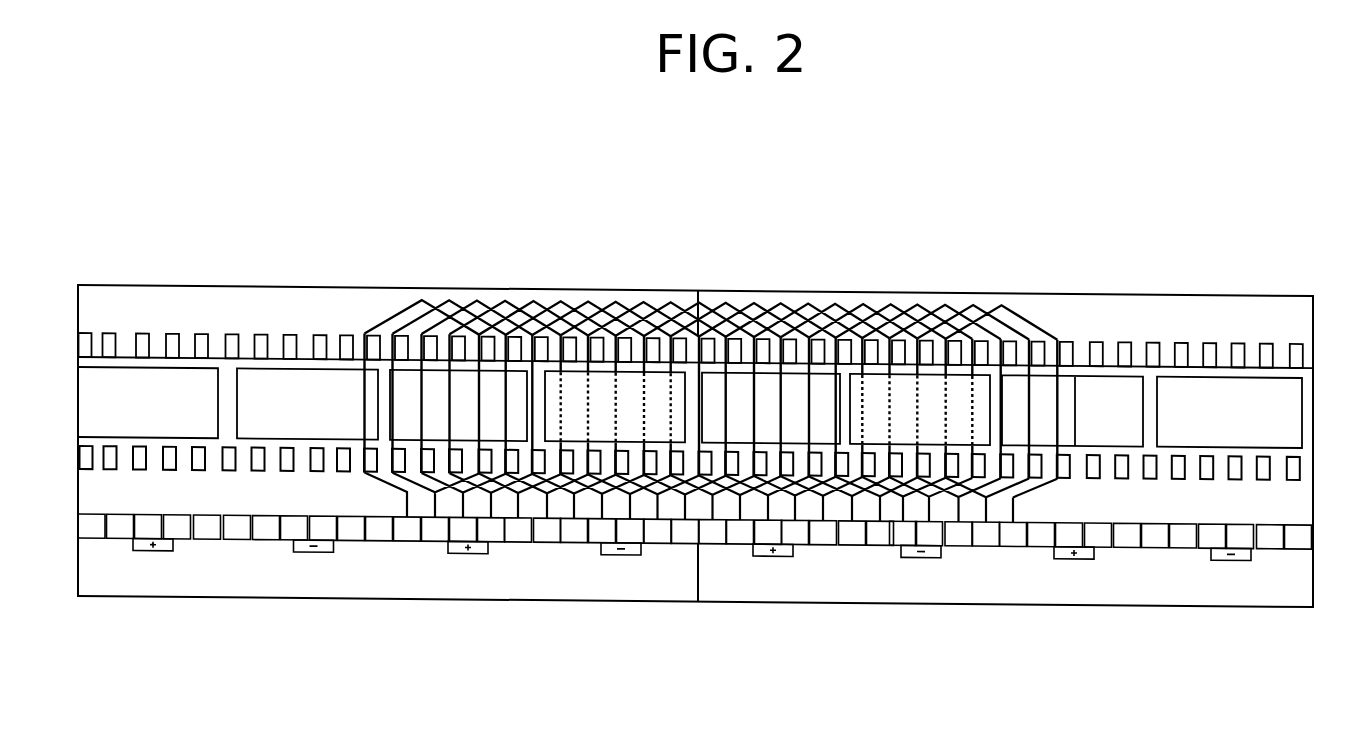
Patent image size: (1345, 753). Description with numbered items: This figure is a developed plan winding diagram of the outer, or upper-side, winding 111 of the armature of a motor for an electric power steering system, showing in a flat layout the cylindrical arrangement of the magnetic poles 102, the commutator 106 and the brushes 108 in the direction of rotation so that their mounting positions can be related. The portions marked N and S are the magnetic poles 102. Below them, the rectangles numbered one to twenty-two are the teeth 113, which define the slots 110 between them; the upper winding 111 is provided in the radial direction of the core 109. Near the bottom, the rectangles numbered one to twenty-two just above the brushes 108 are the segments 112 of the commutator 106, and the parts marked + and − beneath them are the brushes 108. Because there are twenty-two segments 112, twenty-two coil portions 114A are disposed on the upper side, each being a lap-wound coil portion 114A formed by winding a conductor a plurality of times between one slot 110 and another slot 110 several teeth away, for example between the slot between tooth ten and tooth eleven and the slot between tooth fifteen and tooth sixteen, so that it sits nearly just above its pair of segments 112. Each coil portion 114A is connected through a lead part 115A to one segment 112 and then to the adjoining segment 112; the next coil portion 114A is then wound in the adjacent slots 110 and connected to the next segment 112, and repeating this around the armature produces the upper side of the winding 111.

The magnetic poles 102 is at (1285, 393).
The commutator 106 is at (696, 608).
The brushes 108 is at (787, 553).
The core 109 is at (1307, 427).
The slots 110 is at (1165, 347).
The winding 111 is at (681, 467).
The segments 112 is at (368, 542).
The teeth 113 is at (313, 470).
The upper-side coil portion 114A is at (390, 317).
The lead part 115A is at (377, 477).